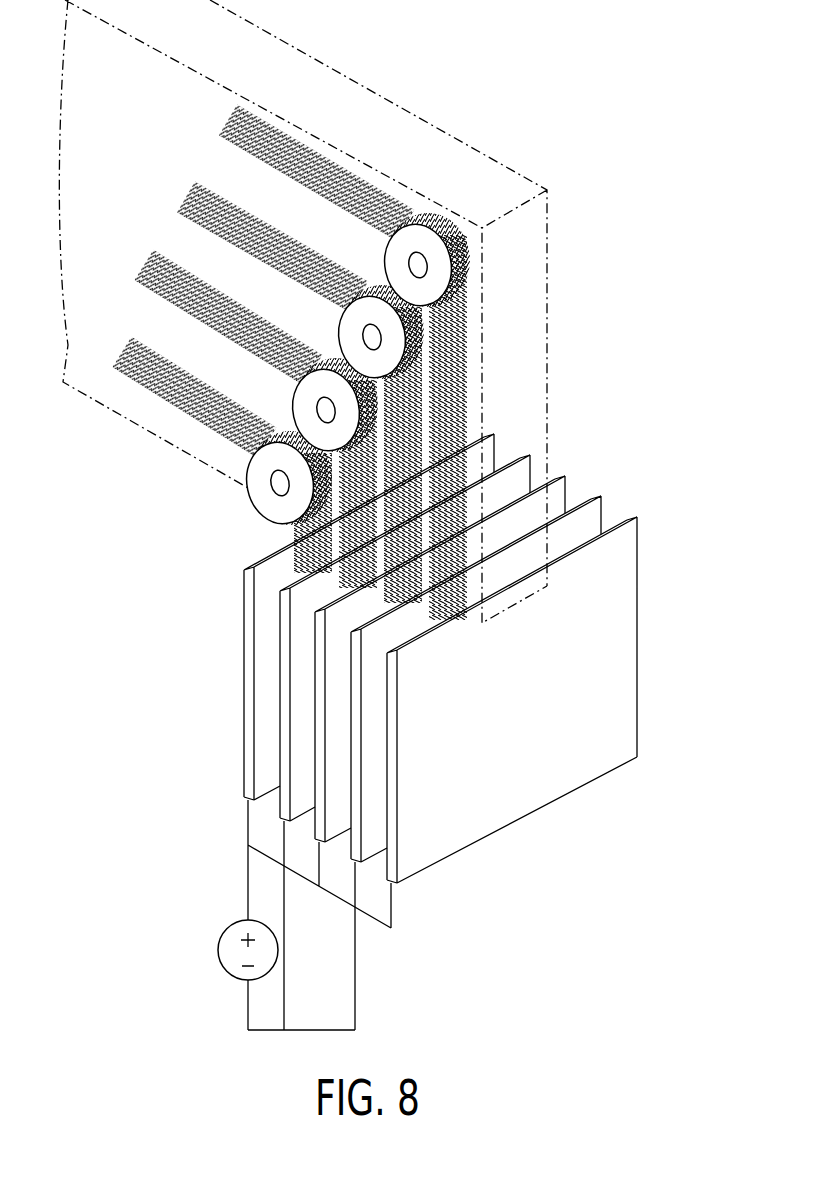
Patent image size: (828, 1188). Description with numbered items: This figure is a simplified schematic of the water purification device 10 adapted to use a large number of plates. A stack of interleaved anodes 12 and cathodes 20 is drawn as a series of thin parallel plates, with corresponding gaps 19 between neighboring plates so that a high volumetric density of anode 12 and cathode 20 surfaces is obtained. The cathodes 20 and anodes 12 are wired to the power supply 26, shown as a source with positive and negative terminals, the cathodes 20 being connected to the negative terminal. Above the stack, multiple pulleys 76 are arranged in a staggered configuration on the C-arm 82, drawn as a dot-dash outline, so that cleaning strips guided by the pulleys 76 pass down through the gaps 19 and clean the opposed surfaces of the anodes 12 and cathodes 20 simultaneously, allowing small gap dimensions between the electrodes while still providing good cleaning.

The water purification device 10 is at (640, 158).
The anode 12 is at (397, 672).
The gap 19 is at (613, 510).
The cathode 20 is at (283, 718).
The power supply 26 is at (225, 930).
The pulleys 76 is at (396, 250).
The C-arm 82 is at (481, 150).